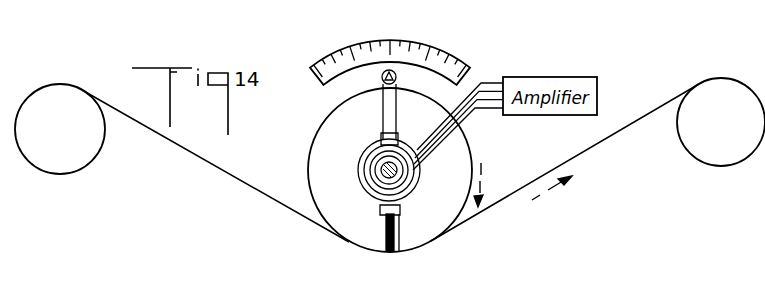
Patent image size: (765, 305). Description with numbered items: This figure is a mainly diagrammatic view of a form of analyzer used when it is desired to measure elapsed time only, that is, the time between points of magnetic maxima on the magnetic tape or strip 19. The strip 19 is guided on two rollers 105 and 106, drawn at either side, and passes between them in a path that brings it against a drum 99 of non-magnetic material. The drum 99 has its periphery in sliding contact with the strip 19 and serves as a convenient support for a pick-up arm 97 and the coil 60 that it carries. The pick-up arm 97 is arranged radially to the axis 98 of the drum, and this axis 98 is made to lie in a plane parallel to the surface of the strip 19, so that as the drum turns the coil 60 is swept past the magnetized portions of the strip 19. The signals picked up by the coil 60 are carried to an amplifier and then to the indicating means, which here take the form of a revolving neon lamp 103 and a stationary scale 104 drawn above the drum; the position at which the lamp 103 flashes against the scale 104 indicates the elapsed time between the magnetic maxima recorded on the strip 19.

The strip 19 is at (258, 189).
The coil 60 is at (386, 252).
The pick-up arm 97 is at (400, 205).
The axis 98 is at (380, 170).
The drum 99 is at (466, 156).
The revolving neon lamp 103 is at (382, 78).
The stationary scale 104 is at (447, 57).
The roller 105 is at (73, 165).
The roller 106 is at (715, 161).